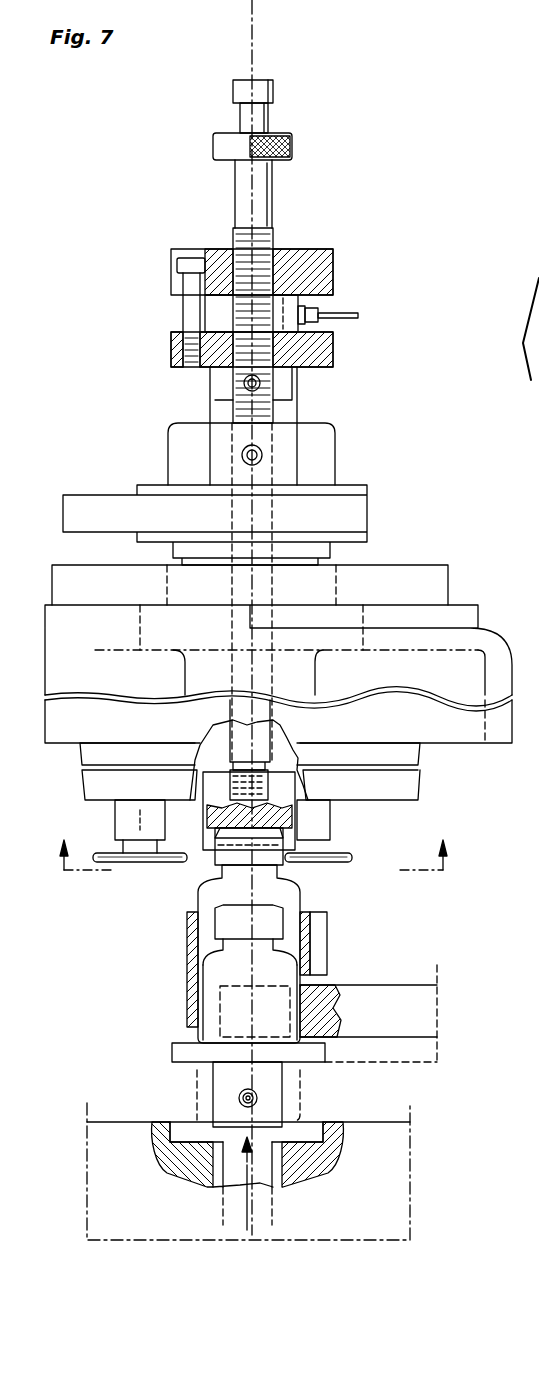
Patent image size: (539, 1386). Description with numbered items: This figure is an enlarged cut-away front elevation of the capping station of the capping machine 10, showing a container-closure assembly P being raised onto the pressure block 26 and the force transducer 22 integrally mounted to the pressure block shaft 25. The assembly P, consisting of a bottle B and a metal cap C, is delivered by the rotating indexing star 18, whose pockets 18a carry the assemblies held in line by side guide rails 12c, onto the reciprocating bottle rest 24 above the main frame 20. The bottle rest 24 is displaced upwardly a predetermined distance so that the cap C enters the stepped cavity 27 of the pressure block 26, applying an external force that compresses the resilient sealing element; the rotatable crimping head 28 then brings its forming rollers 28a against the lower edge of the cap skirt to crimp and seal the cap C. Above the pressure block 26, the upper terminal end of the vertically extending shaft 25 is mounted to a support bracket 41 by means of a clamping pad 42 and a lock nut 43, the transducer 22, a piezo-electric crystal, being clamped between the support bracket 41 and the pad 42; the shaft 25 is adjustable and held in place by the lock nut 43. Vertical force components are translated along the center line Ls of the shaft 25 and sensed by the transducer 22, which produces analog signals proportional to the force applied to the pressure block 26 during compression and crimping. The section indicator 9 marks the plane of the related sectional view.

The capping machine 10 is at (424, 562).
The side guide rails 12c is at (183, 950).
The rotating indexing wheel or star 18 is at (408, 976).
The pockets 18a is at (287, 1013).
The main frame 20 is at (366, 1122).
The force transducer 22 is at (215, 312).
The bottle rest or platform 24 is at (176, 1052).
The pressure block shaft 25 is at (273, 232).
The pressure block 26 is at (220, 783).
The stepped cavity 27 is at (290, 854).
The rotatable crimping head 28 is at (412, 798).
The forming discs or rollers 28a is at (125, 862).
The support bracket 41 is at (326, 274).
The clamping pad 42 is at (326, 362).
The lock nut 43 is at (216, 387).
The bottle B is at (204, 1000).
The cap C is at (289, 842).
The container-closure assembly P is at (205, 930).
The section line 9- 9 is at (260, 872).
The center line of shaft Ls is at (258, 28).